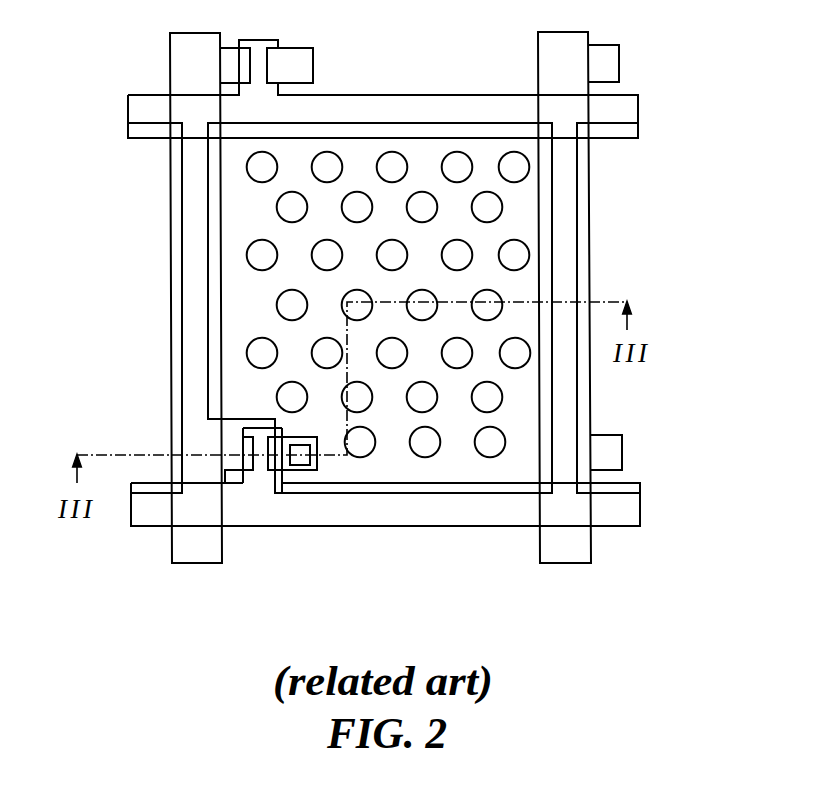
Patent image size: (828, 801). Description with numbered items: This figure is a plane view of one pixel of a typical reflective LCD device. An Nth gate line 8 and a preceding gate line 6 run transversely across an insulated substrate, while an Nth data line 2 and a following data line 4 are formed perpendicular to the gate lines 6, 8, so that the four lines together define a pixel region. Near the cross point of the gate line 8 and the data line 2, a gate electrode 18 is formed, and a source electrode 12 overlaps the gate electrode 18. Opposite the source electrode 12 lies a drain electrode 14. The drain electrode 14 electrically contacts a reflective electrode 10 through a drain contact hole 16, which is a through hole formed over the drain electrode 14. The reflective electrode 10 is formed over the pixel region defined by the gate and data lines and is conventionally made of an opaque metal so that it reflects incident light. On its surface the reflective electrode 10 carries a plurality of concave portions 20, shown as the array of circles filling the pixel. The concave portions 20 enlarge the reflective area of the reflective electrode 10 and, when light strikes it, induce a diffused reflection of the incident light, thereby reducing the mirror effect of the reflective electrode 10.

The Nth data line 2 is at (193, 553).
The (N+1)th data line 4 is at (565, 557).
The (N-1)th gate line 6 is at (623, 111).
The Nth gate line 8 is at (623, 503).
The reflective electrode 10 is at (427, 158).
The source electrode 12 is at (233, 465).
The drain electrode 14 is at (287, 468).
The drain contact hole 16 is at (305, 460).
The gate electrode 18 is at (262, 468).
The concave portions 20 is at (530, 254).